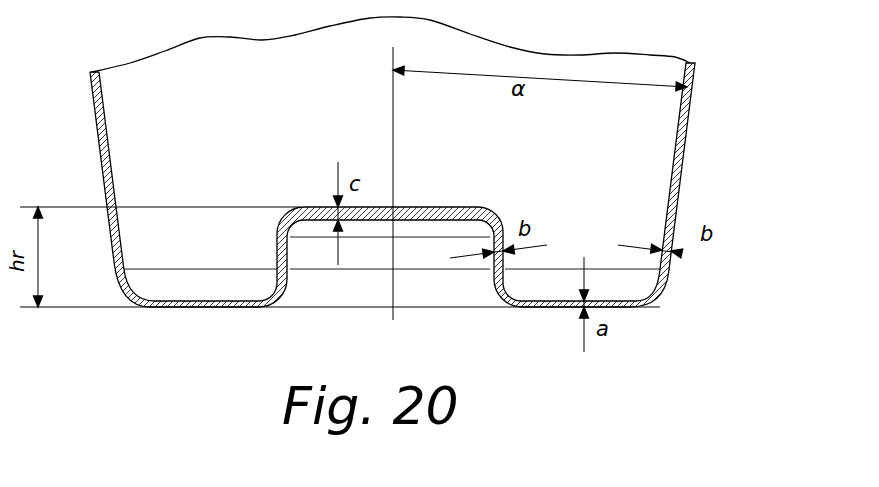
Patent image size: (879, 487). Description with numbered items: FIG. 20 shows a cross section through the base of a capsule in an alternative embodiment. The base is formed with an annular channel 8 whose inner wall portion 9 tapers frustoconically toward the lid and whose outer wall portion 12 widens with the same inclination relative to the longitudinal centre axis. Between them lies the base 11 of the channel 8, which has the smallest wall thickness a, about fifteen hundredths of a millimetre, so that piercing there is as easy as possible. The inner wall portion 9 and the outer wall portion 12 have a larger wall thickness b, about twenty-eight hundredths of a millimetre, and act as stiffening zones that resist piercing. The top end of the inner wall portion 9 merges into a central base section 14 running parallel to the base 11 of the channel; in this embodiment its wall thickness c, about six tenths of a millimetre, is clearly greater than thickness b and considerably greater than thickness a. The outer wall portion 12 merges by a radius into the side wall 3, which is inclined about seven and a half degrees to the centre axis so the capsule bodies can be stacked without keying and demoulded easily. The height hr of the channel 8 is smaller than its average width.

The side wall 3 is at (682, 155).
The annular channel 8 is at (570, 226).
The inner wall portion 9 is at (278, 252).
The base of the channel 11 is at (193, 310).
The outer wall portion 12 is at (118, 250).
The central base section 14 is at (422, 207).